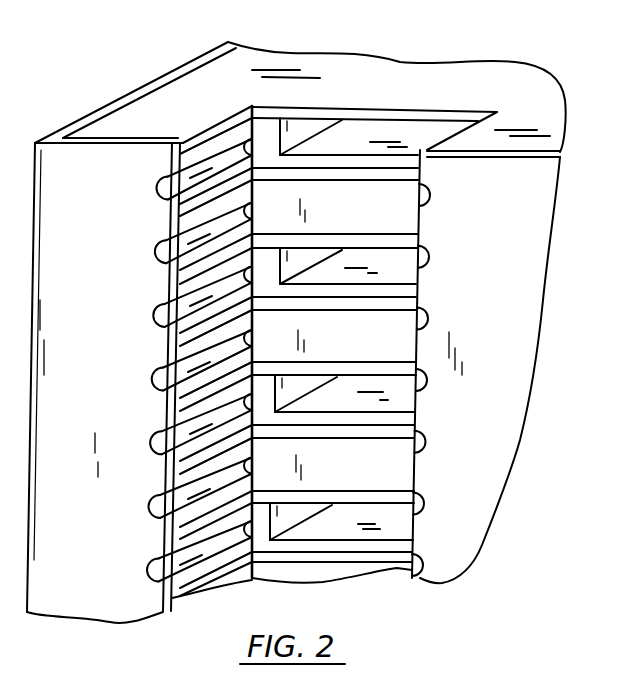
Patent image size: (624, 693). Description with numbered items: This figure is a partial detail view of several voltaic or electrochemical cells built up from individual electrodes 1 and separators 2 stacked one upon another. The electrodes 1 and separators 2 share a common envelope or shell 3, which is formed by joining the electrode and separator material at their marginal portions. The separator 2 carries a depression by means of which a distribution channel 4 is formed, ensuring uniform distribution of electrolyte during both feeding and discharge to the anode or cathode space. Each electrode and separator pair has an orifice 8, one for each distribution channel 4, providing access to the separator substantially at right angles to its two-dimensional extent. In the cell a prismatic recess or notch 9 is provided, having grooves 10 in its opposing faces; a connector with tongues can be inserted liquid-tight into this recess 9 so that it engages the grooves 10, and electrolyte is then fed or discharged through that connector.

The electrode 1 is at (421, 218).
The separator 2 is at (398, 297).
The common envelope or shell 3 is at (110, 600).
The distribution channel 4 is at (390, 143).
The orifice 8 is at (367, 136).
The prismatic recess or notch 9 is at (167, 342).
The groove 10 is at (165, 450).